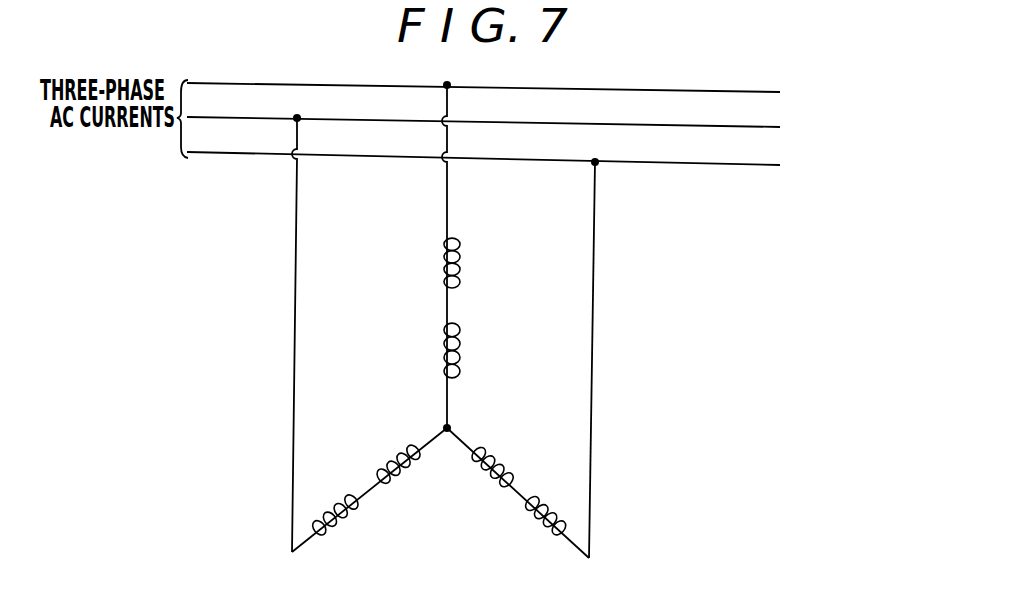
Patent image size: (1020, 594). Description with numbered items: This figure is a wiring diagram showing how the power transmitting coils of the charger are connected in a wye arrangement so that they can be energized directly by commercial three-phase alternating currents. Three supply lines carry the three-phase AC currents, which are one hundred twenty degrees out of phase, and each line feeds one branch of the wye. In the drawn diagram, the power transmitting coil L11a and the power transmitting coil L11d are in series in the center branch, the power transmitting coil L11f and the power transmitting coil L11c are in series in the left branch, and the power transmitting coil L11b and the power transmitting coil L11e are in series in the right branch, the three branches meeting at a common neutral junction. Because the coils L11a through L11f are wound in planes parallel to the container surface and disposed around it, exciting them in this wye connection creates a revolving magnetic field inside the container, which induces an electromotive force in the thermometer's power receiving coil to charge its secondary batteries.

The power transmitting coil L11a is at (471, 279).
The power transmitting coil L11b is at (519, 468).
The power transmitting coil L11c is at (326, 498).
The power transmitting coil L11d is at (472, 363).
The power transmitting coil L11e is at (561, 504).
The power transmitting coil L11f is at (385, 452).